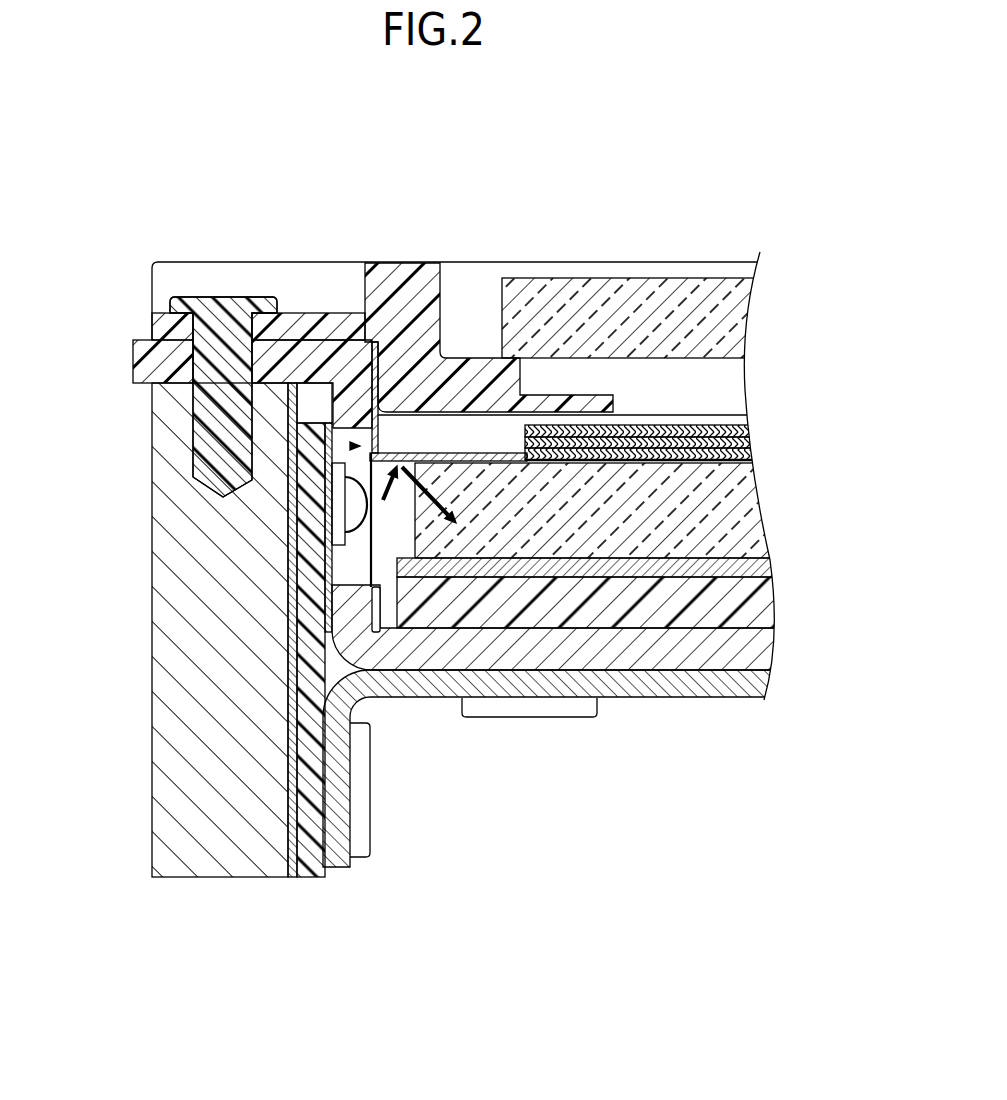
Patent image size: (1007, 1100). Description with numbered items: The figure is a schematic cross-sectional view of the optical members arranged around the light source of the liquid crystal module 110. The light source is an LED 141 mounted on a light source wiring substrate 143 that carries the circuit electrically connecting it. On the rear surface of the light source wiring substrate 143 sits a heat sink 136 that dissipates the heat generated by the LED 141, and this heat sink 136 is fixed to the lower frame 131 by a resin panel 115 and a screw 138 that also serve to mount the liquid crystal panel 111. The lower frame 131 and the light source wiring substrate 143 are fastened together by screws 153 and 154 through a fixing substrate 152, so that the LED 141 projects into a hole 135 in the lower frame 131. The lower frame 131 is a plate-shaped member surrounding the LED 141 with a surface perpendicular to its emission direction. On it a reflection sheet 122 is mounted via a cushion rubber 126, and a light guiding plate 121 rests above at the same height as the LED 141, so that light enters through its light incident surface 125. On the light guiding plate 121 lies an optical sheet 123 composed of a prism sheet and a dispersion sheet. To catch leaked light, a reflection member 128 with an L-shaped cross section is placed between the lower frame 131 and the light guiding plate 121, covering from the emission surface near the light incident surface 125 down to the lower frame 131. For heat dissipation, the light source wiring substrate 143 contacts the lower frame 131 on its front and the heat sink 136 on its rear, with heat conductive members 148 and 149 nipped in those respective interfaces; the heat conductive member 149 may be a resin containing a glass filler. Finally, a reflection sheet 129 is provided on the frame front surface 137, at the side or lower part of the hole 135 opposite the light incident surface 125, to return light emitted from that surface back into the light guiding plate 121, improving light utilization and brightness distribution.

The liquid crystal module 110 is at (708, 153).
The liquid crystal panel 111 is at (735, 305).
The resin panel 115 is at (403, 280).
The light guiding plate 121 is at (755, 508).
The reflection sheet 122 is at (767, 568).
The optical sheet 123 is at (760, 424).
The light incident surface 125 is at (410, 516).
The cushion rubber 126 is at (771, 599).
The reflection member 128 is at (373, 360).
The reflection sheet 129 is at (383, 612).
The lower frame 131 is at (150, 360).
The hole 135 is at (352, 446).
The heat sink 136 is at (155, 703).
The frame front surface 137 is at (363, 605).
The screw 138 is at (221, 296).
The LED 141 is at (353, 503).
The light source wiring substrate 143 is at (310, 522).
The heat conductive member 148 is at (328, 540).
The heat conductive member 149 is at (297, 835).
The fixing substrate 152 is at (717, 690).
The screw 153 is at (528, 710).
The screw 154 is at (358, 825).